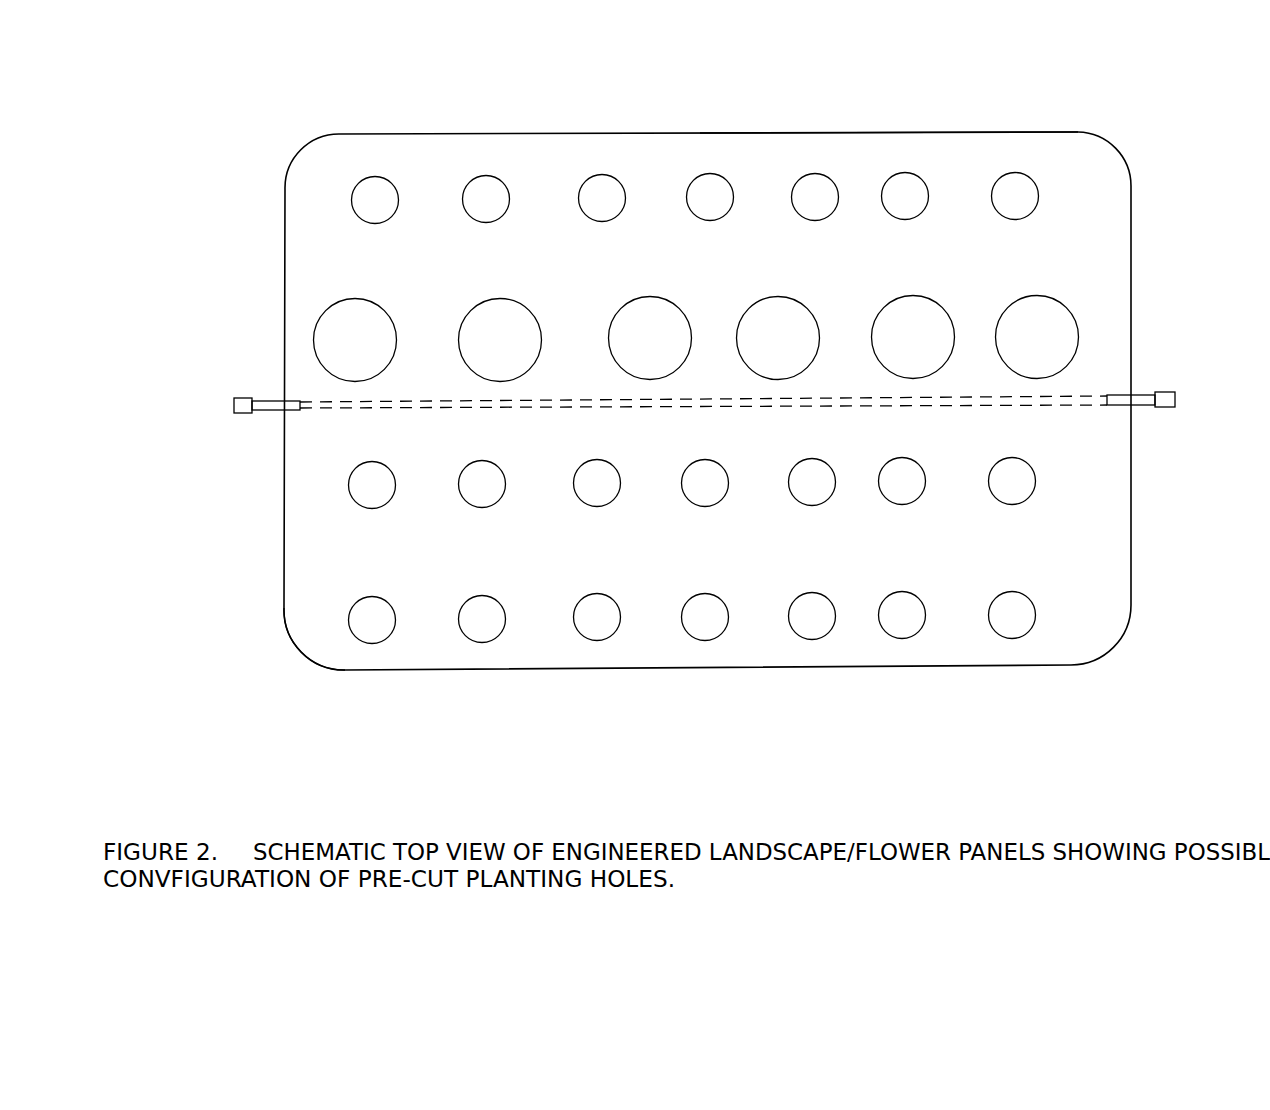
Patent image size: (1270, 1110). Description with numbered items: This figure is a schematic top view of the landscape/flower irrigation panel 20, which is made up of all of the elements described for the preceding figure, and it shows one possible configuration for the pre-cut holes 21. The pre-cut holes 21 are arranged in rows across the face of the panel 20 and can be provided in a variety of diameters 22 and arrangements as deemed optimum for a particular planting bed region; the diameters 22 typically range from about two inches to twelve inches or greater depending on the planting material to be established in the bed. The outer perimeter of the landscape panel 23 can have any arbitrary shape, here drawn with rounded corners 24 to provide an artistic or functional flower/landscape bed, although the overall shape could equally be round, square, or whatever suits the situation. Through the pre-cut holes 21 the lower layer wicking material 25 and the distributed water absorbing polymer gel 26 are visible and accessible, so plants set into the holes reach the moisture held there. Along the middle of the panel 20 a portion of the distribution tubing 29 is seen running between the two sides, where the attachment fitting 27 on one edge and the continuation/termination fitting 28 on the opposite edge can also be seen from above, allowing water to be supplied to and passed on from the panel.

The panel 20 is at (257, 262).
The pre-cut holes 21 is at (646, 350).
The diameters 22 is at (355, 300).
The outer perimeter of the landscape panel 23 is at (942, 133).
The rounded corners 24 is at (303, 655).
The lower layer wicking material 25 is at (372, 483).
The distributed water absorbing polymer gel 26 is at (819, 202).
The attachment fitting 27 is at (234, 405).
The continuation/termination fitting 28 is at (1175, 400).
The distribution tubing 29 is at (275, 405).